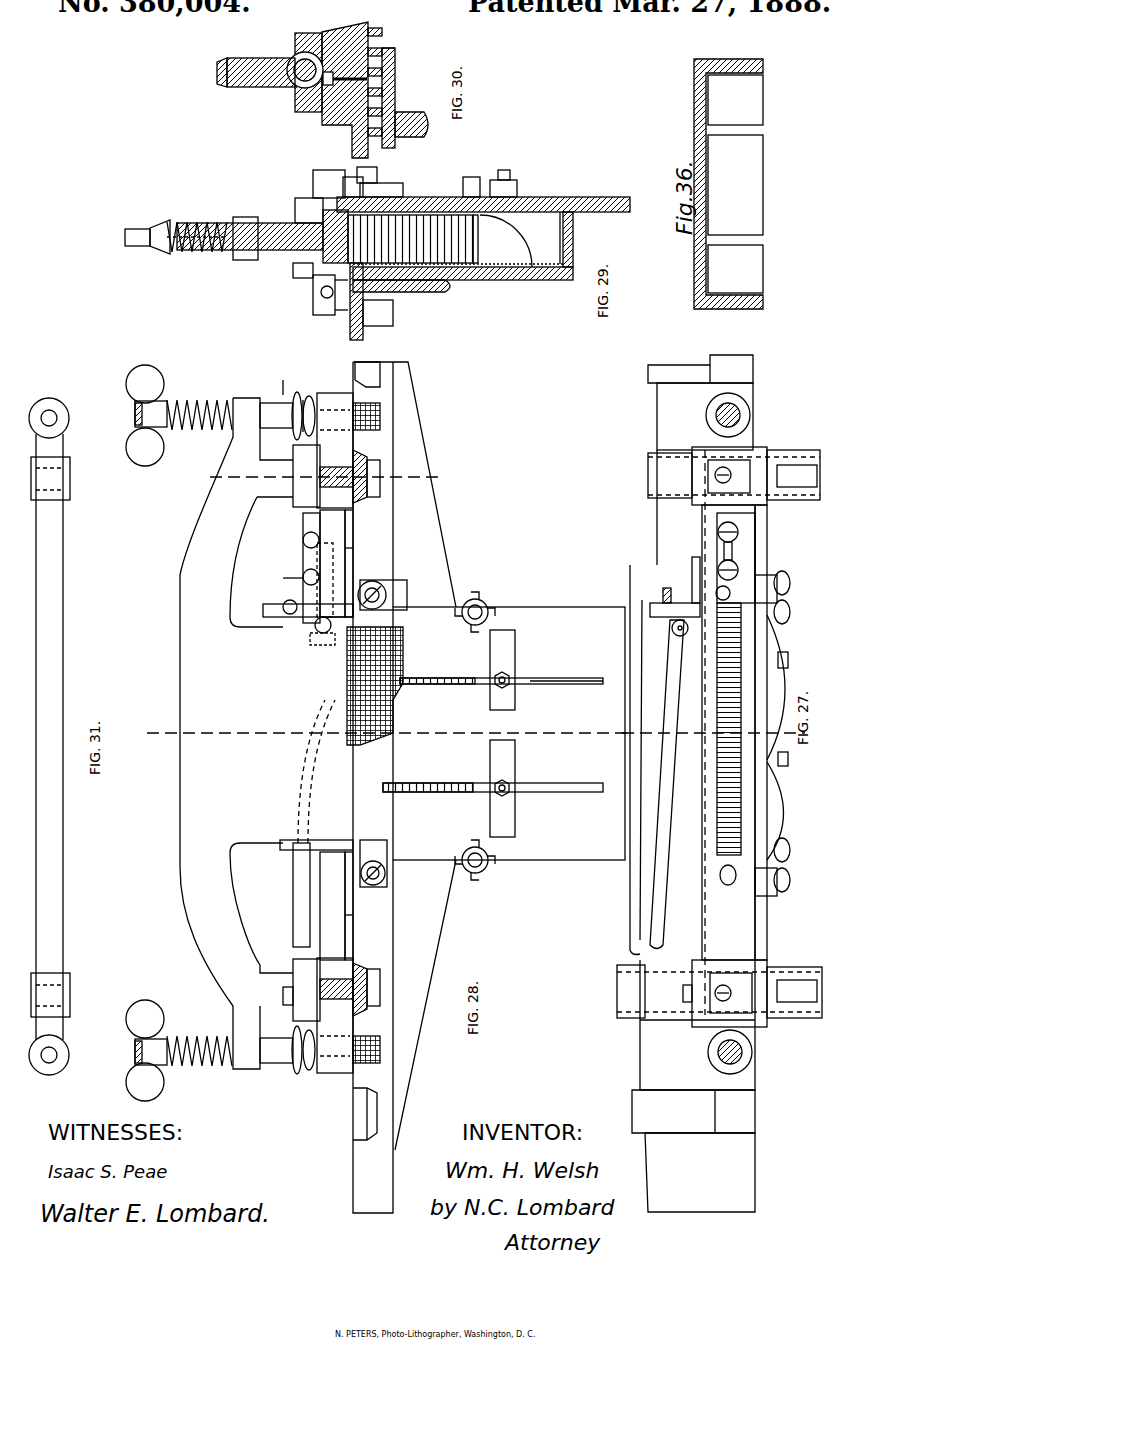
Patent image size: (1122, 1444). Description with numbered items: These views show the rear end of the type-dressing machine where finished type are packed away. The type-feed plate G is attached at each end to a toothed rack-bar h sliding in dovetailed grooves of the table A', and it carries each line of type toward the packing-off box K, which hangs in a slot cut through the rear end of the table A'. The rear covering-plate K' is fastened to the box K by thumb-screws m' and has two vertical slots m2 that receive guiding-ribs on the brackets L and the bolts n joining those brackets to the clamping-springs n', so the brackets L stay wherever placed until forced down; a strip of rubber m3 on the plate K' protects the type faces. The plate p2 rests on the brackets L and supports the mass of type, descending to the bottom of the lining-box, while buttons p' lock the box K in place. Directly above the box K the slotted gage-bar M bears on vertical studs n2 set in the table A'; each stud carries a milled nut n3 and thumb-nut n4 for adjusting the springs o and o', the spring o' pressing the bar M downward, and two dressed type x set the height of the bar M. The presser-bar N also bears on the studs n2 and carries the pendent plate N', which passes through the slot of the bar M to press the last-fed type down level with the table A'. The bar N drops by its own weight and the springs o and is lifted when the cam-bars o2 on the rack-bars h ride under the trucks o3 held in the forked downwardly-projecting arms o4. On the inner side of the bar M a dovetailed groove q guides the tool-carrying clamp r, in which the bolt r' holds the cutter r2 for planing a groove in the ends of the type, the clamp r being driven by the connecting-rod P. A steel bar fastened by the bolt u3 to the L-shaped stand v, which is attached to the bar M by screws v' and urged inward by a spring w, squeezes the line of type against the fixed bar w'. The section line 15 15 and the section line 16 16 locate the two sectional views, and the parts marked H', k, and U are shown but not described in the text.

In FIG. 30, the type-feed plate G is at (356, 140).
In FIG. 29, the type-feed plate G is at (360, 304).
In FIG. 27, the type-feed plate G is at (660, 702).
In FIG. 30, the table A' is at (405, 98).
In FIG. 29, the table A' is at (392, 313).
In FIG. 27, the table A' is at (697, 797).
In FIG. 28, the bracket H' is at (394, 787).
In FIG. 27, the bracket H' is at (693, 736).
In FIG. 30, the toothed rack-bar h is at (385, 30).
In FIG. 28, the toothed rack-bar h is at (375, 500).
In FIG. 27, the toothed rack-bar h is at (643, 470).
In FIG. 30, the slotted gage-bar M is at (296, 95).
In FIG. 29, the slotted gage-bar M is at (335, 236).
In FIG. 28, the slotted gage-bar M is at (336, 735).
In FIG. 27, the slotted gage-bar M is at (728, 732).
In FIG. 30, the vertically-movable presser-bar N is at (261, 81).
In FIG. 29, the vertically-movable presser-bar N is at (245, 230).
In FIG. 31, the vertically-movable presser-bar N is at (49, 736).
In FIG. 28, the vertically-movable presser-bar N is at (236, 733).
In FIG. 29, the pendent plate N' is at (307, 196).
In FIG. 28, the pendent plate N' is at (275, 647).
In FIG. 29, the bolt n is at (502, 166).
In FIG. 28, the bolt n is at (498, 758).
In FIG. 27, the bolt n is at (791, 710).
In FIG. 29, the clamping-spring n' is at (511, 181).
In FIG. 28, the clamping-spring n' is at (504, 723).
In FIG. 27, the clamping-spring n' is at (781, 737).
In FIG. 30, the vertical stud n2 is at (212, 62).
In FIG. 29, the vertical stud n2 is at (140, 228).
In FIG. 28, the vertical stud n2 is at (201, 733).
In FIG. 27, the vertical stud n2 is at (718, 415).
In FIG. 28, the milled nut n3 is at (328, 737).
In FIG. 28, the thumb-nut n4 is at (145, 733).
In FIG. 29, the spring o is at (197, 219).
In FIG. 28, the spring o is at (199, 726).
In FIG. 28, the spring o' is at (311, 735).
In FIG. 30, the cam-bar o2 is at (340, 90).
In FIG. 28, the cam-bar o2 is at (340, 465).
In FIG. 27, the cam-bar o2 is at (768, 734).
In FIG. 30, the truck o3 is at (300, 62).
In FIG. 28, the truck o3 is at (277, 685).
In FIG. 28, the downwardly-projecting arm o4 is at (293, 950).
In FIG. 29, the packing-off box K is at (483, 249).
In FIG. 36, the packing-off box K is at (720, 184).
In FIG. 29, the rear covering-plate K' is at (550, 223).
In FIG. 28, the rear covering-plate K' is at (509, 733).
In FIG. 27, the rear covering-plate K' is at (763, 732).
In FIG. 29, the casing compartment k is at (377, 172).
In FIG. 36, the casing compartment k is at (740, 168).
In FIG. 29, the bracket L is at (431, 239).
In FIG. 28, the bracket L is at (515, 680).
In FIG. 29, the connecting-rod P is at (509, 241).
In FIG. 28, the connecting-rod P is at (293, 905).
In FIG. 27, the connecting-rod P is at (662, 688).
In FIG. 29, the button p' is at (390, 182).
In FIG. 28, the button p' is at (382, 733).
In FIG. 27, the button p' is at (771, 727).
In FIG. 29, the plate p2 is at (482, 239).
In FIG. 28, the plate p2 is at (470, 678).
In FIG. 29, the thumb-screw m' is at (465, 179).
In FIG. 28, the thumb-screw m' is at (474, 729).
In FIG. 27, the thumb-screw m' is at (788, 731).
In FIG. 28, the vertical slot m2 is at (572, 680).
In FIG. 29, the strip of rubber m3 is at (351, 186).
In FIG. 28, the strip of rubber m3 is at (375, 677).
In FIG. 29, the longitudinal dovetailed groove q is at (295, 270).
In FIG. 29, the tool-carrying clamp r is at (314, 295).
In FIG. 27, the tool-carrying clamp r is at (659, 600).
In FIG. 29, the bolt r' is at (318, 289).
In FIG. 27, the bolt r' is at (666, 585).
In FIG. 29, the cutter r2 is at (340, 313).
In FIG. 27, the cutter r2 is at (686, 596).
In FIG. 28, the L-shaped stand v is at (283, 603).
In FIG. 27, the L-shaped stand v is at (733, 593).
In FIG. 28, the screw v' is at (309, 568).
In FIG. 27, the screw v' is at (736, 558).
In FIG. 28, the bolt u3 is at (290, 583).
In FIG. 27, the bolt u3 is at (721, 712).
In FIG. 27, the carrier U is at (755, 513).
In FIG. 28, the spring w is at (307, 727).
In FIG. 27, the spring w is at (746, 623).
In FIG. 27, the fixed bar w' is at (734, 877).
In FIG. 28, the dressed type x is at (355, 740).
In FIG. 28, the section line 15 is at (389, 736).
In FIG. 27, the section line 15 is at (713, 739).
In FIG. 28, the section line 16 is at (329, 476).